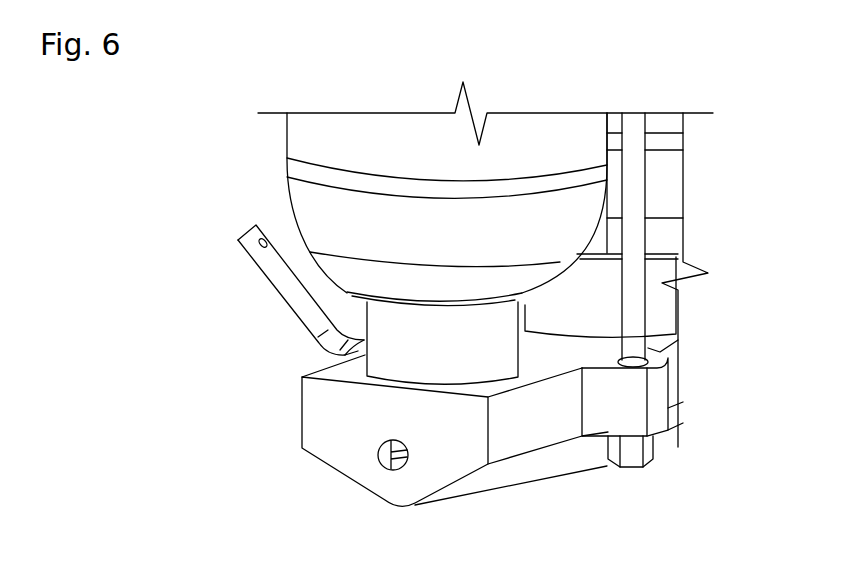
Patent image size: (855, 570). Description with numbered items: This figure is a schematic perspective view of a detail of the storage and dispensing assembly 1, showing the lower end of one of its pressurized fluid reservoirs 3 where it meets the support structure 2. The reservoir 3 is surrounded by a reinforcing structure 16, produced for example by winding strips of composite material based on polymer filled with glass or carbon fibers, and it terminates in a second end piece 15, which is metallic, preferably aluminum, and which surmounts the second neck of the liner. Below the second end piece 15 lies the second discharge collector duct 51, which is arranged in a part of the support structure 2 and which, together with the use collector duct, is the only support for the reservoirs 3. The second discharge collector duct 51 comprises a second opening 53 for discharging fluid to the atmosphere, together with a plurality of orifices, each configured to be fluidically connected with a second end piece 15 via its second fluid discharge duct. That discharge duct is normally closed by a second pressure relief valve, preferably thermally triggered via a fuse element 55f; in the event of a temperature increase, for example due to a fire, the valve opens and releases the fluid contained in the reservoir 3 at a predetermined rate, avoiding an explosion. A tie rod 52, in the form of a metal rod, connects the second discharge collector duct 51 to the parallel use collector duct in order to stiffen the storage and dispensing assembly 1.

The storage and dispensing assembly 1 is at (186, 154).
The support structure 2 is at (565, 468).
The pressurized fluid reservoir 3 is at (302, 150).
The second end piece 15 is at (388, 355).
The reinforcing structure 16 is at (297, 188).
The second discharge collector duct 51 is at (318, 417).
The tie rod 52 is at (640, 195).
The second opening 53 is at (377, 453).
The fuse element 55f is at (300, 308).